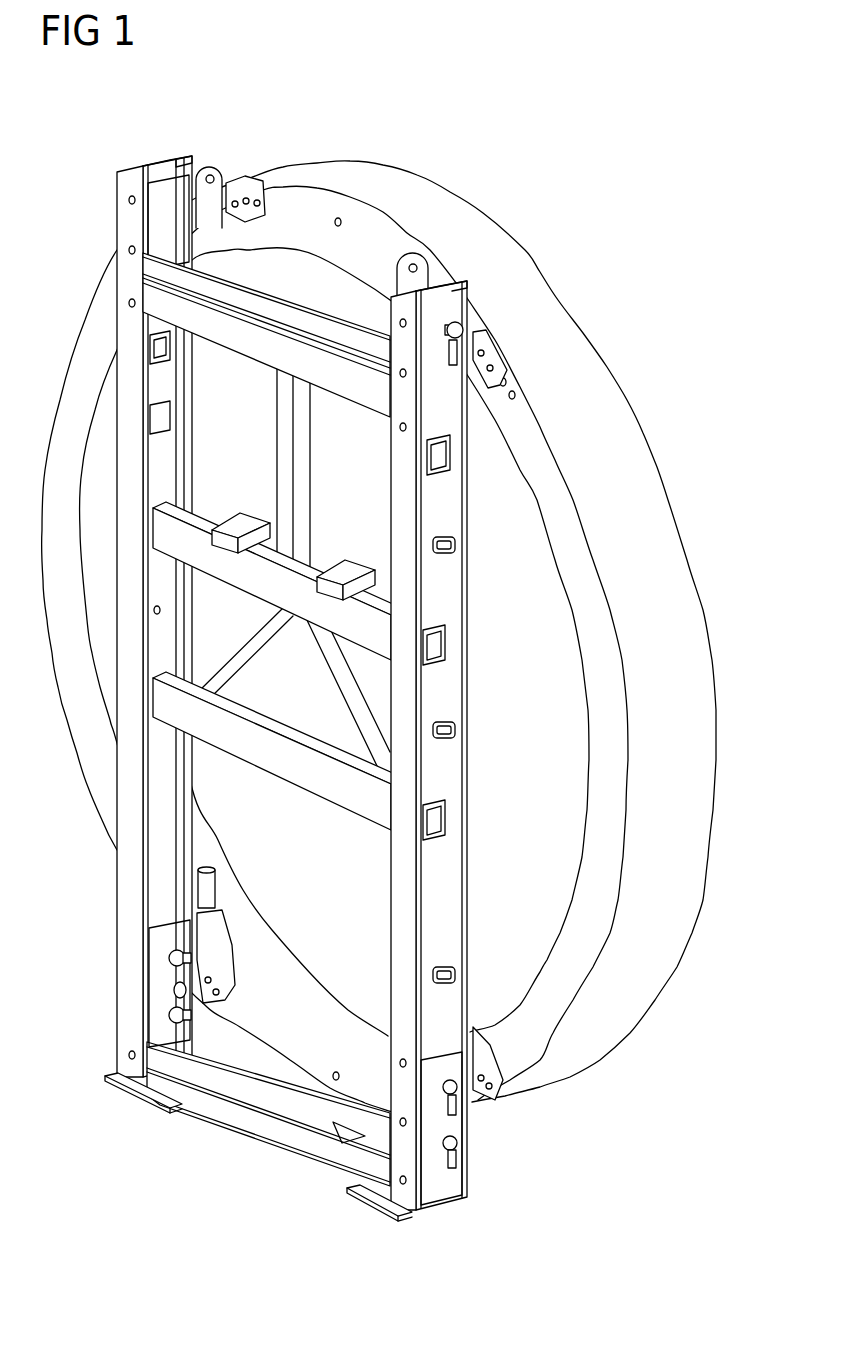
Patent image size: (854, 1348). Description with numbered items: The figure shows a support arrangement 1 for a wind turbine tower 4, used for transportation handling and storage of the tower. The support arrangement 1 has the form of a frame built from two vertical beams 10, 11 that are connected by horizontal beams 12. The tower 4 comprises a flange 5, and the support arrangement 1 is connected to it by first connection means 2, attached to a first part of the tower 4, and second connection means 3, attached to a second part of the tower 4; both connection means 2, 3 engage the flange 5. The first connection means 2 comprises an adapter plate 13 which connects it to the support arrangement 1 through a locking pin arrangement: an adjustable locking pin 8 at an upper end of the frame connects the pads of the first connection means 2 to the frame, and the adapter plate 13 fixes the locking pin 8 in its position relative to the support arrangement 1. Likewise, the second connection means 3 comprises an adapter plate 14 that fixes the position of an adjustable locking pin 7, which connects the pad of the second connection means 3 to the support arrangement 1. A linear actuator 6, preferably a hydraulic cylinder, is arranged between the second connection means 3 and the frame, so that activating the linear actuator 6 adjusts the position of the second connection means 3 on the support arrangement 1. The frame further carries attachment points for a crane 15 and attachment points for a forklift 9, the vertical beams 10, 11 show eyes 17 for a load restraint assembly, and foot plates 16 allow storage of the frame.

The support arrangement 1 is at (298, 694).
The first connection means 2 is at (240, 183).
The second connection means 3 is at (225, 980).
The wind turbine tower 4 is at (686, 527).
The flange 5 is at (590, 703).
The linear actuator 6 is at (215, 895).
The adjustable locking pin 7 is at (168, 958).
The adjustable locking pin 8 is at (460, 326).
The attachment points for a forklift 9 is at (238, 513).
The vertical beam 10 is at (120, 885).
The vertical beam 11 is at (391, 873).
The horizontal beams 12 is at (235, 343).
The adapter plate 13 is at (163, 185).
The adapter plate 14 is at (155, 935).
The attachment points for a crane 15 is at (212, 170).
The foot plates 16 is at (128, 1095).
The eyes 17 is at (456, 545).